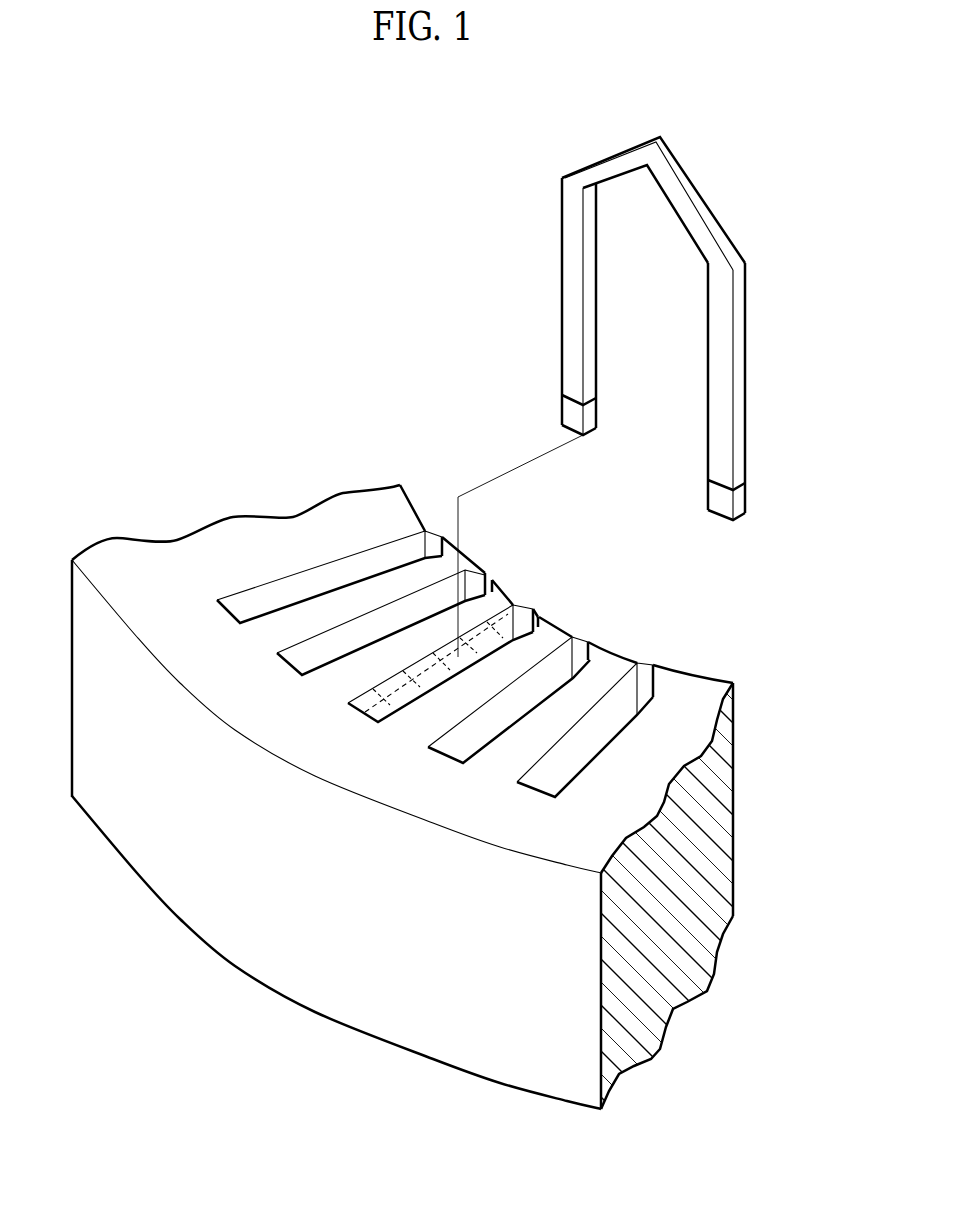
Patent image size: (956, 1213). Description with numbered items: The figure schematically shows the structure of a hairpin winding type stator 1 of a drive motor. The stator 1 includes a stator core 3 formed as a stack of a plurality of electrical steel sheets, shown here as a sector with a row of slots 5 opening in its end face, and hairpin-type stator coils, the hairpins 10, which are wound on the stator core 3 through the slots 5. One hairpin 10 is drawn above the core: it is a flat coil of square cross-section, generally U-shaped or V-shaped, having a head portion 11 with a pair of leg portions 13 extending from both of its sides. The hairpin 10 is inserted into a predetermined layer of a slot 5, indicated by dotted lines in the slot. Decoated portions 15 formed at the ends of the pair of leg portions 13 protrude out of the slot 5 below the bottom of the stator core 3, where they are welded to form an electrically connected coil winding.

The stator 1 is at (322, 199).
The stator core 3 is at (710, 844).
The slot 5 is at (357, 717).
The hairpin 10 is at (630, 396).
The head portion 11 is at (690, 197).
The leg portion 13 is at (570, 337).
The decoated portion 15 is at (570, 413).